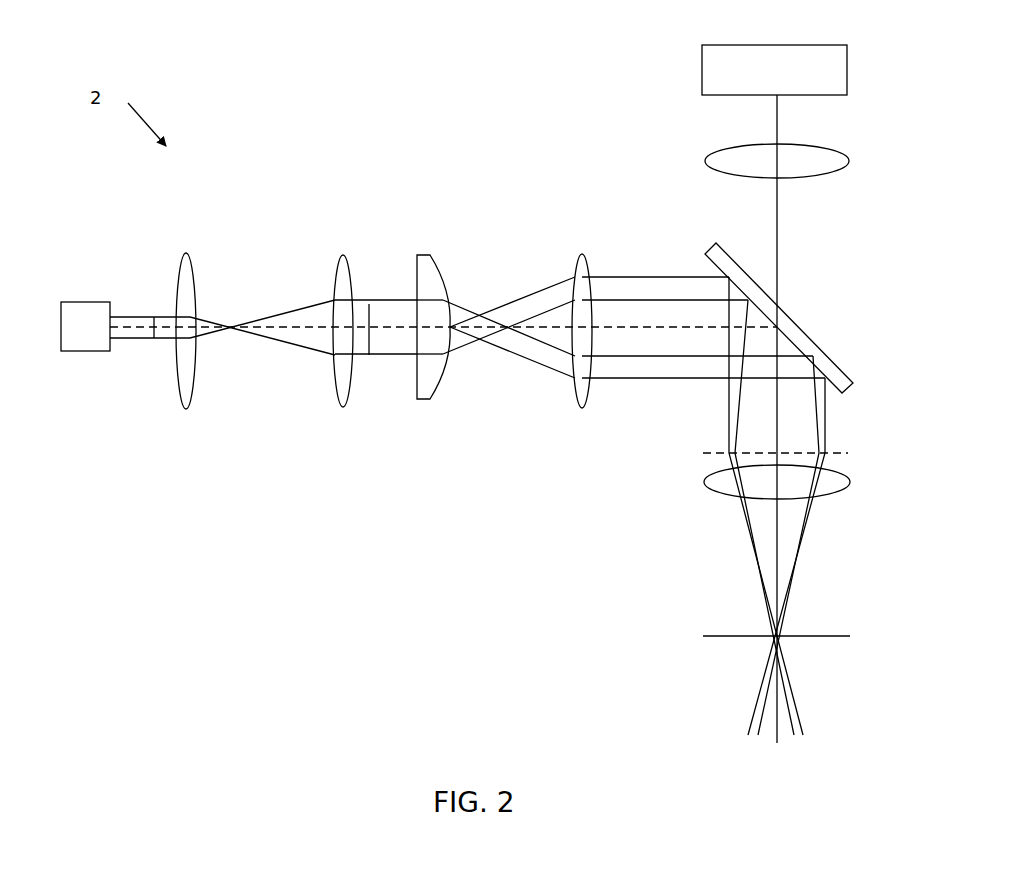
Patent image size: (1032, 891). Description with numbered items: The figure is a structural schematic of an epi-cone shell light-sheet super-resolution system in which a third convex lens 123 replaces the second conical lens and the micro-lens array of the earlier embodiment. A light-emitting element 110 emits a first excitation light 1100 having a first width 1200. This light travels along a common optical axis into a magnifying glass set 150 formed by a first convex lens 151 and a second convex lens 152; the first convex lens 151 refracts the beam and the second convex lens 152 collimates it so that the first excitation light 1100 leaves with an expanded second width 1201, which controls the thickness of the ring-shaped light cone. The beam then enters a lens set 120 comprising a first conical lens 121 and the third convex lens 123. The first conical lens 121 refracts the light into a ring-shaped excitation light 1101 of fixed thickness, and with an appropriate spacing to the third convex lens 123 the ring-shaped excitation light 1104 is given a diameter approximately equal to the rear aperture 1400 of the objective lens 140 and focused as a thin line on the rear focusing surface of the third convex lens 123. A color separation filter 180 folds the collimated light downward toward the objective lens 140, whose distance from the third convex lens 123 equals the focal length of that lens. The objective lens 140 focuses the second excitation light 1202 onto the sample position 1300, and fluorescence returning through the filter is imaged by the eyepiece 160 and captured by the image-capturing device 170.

The light-emitting element 110 is at (77, 305).
The first excitation light 1100 is at (134, 335).
The first width 1200 is at (153, 317).
The magnifying glass set 150 is at (264, 291).
The first convex lens 151 is at (197, 285).
The second convex lens 152 is at (332, 292).
The second width 1201 is at (369, 335).
The lens set 120 is at (504, 282).
The first conical lens 121 is at (437, 276).
The third convex lens 123 is at (573, 273).
The ring-shaped excitation light 1101 is at (540, 357).
The ring-shaped excitation light 1104 is at (655, 293).
The color separation filter 180 is at (806, 335).
The image-capturing device 170 is at (848, 78).
The eyepiece 160 is at (839, 167).
The rear aperture of the objective lens 1400 is at (830, 453).
The objective lens 140 is at (830, 497).
The second excitation light 1202 is at (765, 580).
The sample position 1300 is at (773, 640).